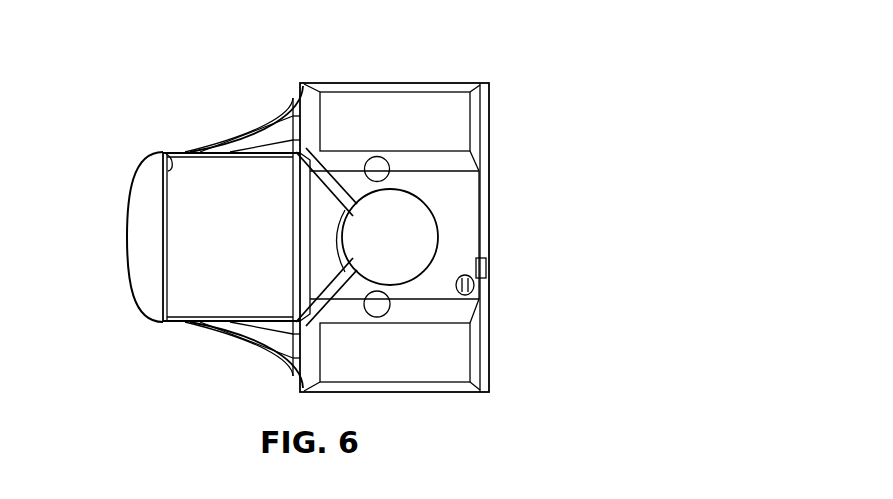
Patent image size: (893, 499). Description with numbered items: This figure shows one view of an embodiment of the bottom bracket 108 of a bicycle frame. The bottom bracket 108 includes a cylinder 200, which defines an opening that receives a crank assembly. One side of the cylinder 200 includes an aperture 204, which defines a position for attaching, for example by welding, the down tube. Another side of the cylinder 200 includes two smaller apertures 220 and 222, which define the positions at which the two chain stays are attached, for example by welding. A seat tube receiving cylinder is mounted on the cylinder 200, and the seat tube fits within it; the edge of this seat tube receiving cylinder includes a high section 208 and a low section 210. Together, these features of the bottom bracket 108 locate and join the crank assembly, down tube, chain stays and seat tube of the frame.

The bottom bracket 108 is at (236, 79).
The cylinder 200 is at (478, 83).
The aperture 204 is at (423, 237).
The high section 208 is at (127, 235).
The low section 210 is at (163, 152).
The aperture 220 is at (372, 165).
The aperture 222 is at (382, 308).